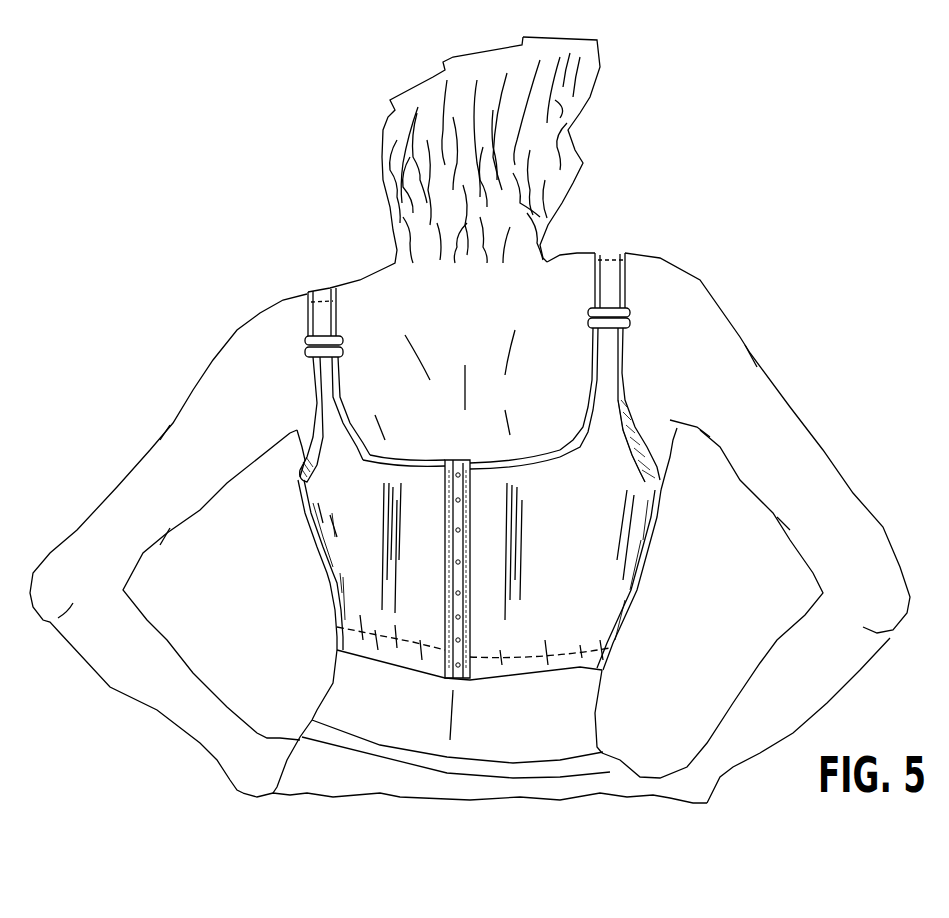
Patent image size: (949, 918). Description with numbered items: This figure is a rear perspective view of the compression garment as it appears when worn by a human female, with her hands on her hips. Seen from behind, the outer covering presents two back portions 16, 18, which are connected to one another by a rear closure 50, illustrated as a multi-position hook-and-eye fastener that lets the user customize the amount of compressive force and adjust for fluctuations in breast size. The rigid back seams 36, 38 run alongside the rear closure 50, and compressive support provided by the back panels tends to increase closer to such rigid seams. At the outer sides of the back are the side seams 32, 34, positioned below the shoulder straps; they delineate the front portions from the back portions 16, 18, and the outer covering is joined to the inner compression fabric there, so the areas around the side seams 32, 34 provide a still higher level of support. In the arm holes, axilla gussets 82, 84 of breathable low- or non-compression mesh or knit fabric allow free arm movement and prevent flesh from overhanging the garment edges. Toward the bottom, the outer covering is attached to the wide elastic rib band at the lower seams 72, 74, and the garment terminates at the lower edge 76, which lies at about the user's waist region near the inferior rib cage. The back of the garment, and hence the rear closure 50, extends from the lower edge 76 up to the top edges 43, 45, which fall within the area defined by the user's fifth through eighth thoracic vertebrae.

The back portion 16 is at (570, 561).
The back portion 18 is at (374, 561).
The side seam 32 is at (645, 595).
The side seam 34 is at (327, 582).
The back seam 36 is at (467, 513).
The back seam 38 is at (446, 510).
The top edge 43 is at (554, 458).
The top edge 45 is at (410, 458).
The rear closure 50 is at (465, 462).
The lower seam 72 is at (528, 660).
The lower seam 74 is at (396, 647).
The lower edge 76 is at (414, 668).
The axilla gusset 82 is at (647, 453).
The axilla gusset 84 is at (313, 462).